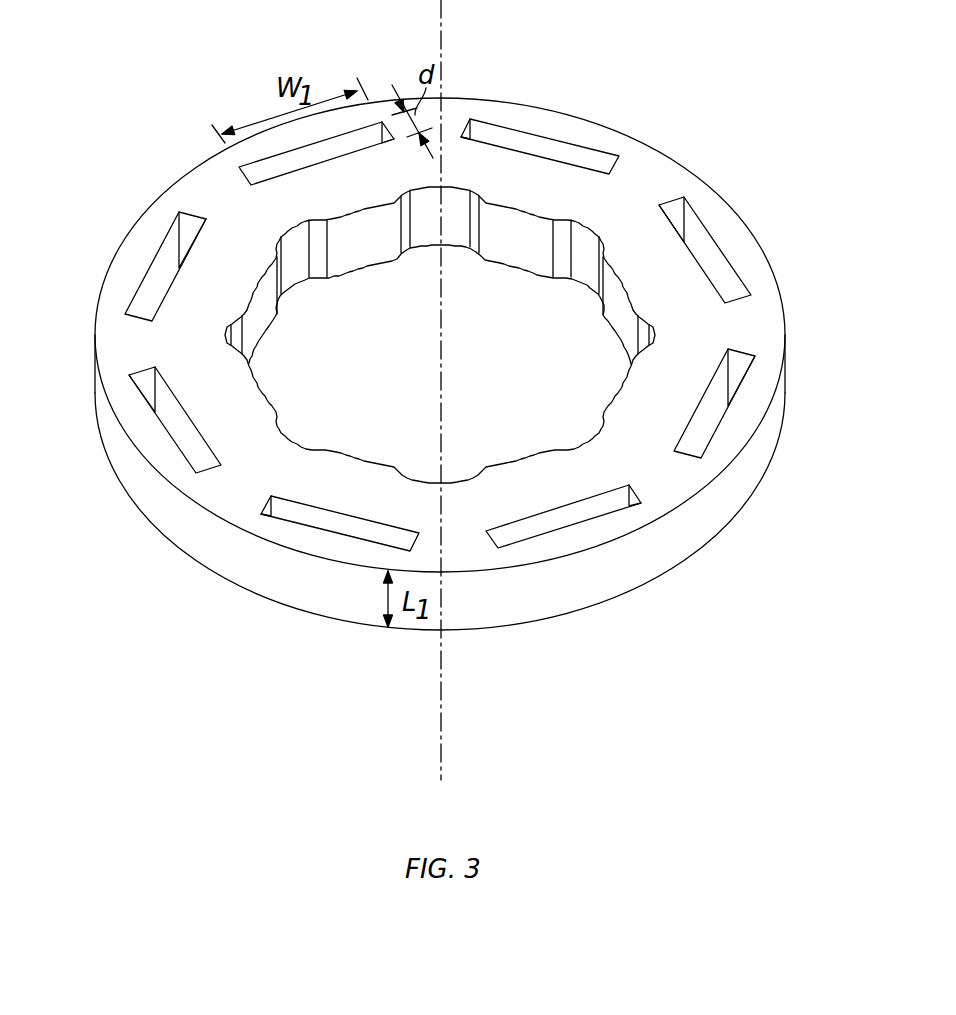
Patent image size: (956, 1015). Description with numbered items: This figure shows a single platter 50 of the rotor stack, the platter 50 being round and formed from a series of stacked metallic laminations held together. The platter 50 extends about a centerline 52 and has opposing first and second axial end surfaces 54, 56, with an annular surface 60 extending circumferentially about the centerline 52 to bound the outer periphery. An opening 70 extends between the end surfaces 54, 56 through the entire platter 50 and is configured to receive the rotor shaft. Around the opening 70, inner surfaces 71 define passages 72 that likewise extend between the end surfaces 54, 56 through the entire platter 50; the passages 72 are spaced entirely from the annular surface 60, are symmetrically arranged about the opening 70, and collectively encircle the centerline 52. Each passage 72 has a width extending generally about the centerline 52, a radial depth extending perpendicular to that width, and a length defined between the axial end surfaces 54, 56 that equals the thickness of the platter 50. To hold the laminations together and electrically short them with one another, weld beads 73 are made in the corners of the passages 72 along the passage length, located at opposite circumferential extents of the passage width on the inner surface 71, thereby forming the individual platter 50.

The platter 50 is at (449, 353).
The centerline 52 is at (444, 24).
The first axial end surface 54 is at (198, 190).
The second axial end surface 56 is at (523, 623).
The annular surface 60 is at (732, 500).
The opening 70 is at (553, 268).
The inner surface 71 is at (370, 134).
The passage 72 is at (714, 227).
The weld bead 73 is at (686, 240).